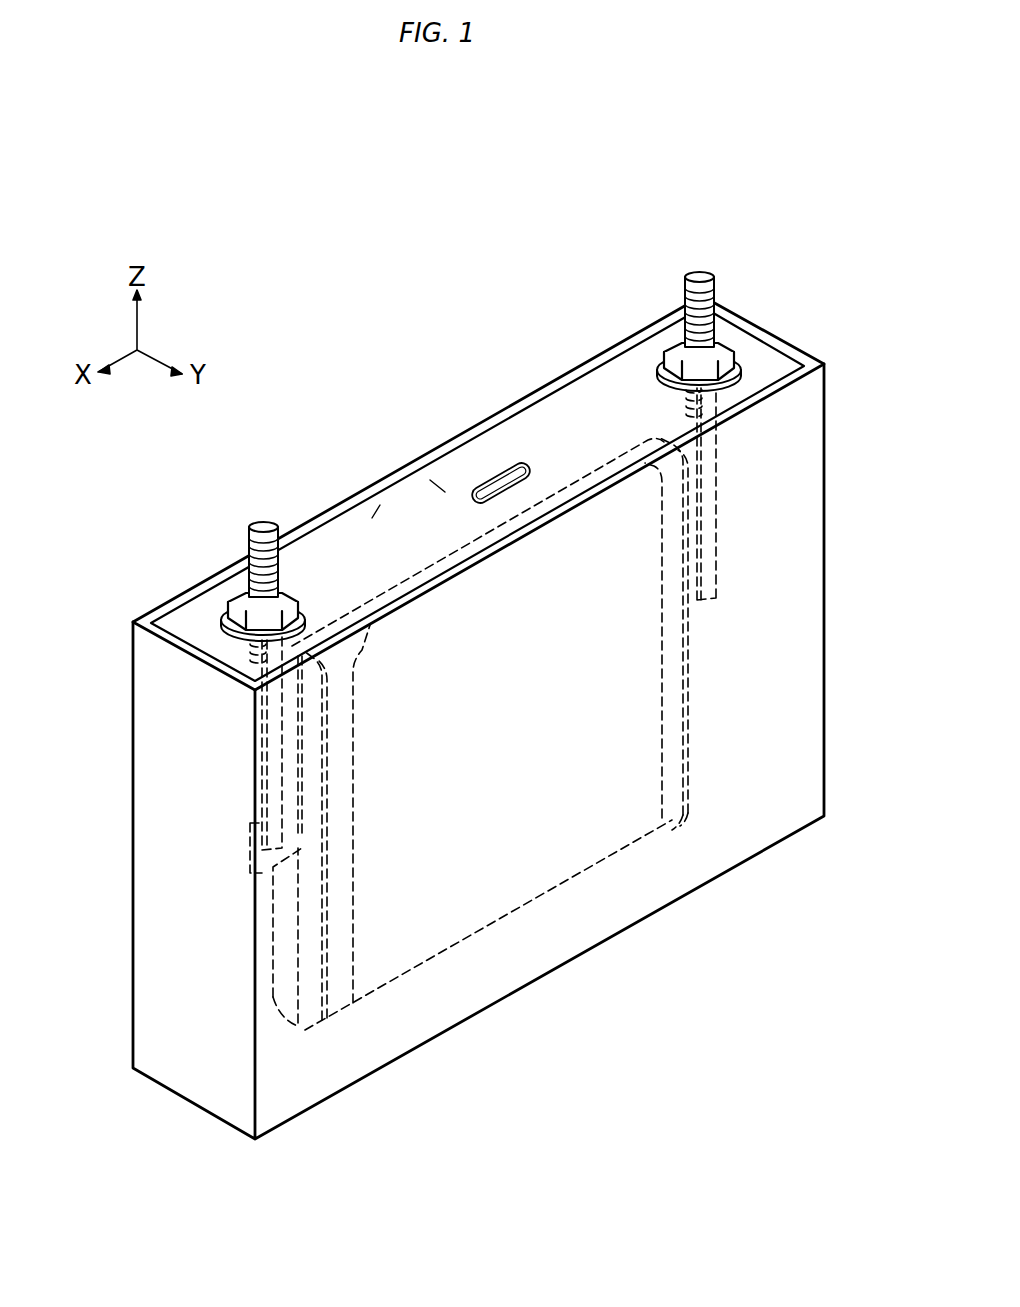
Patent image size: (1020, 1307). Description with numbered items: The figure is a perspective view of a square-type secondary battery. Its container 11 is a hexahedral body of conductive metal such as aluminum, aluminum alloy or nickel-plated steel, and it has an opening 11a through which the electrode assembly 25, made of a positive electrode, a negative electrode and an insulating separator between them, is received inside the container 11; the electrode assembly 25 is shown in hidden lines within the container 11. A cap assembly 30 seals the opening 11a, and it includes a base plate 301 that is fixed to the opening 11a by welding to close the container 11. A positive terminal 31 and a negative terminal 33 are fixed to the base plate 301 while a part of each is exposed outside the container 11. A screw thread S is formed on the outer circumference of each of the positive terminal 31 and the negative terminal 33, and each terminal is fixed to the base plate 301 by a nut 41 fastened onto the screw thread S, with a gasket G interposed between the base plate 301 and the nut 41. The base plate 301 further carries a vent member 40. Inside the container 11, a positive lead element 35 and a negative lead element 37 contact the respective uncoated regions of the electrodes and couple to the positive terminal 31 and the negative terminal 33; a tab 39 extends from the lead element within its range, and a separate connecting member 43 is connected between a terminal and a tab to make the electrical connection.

The container 11 is at (826, 438).
The opening 11a is at (590, 365).
The electrode assembly 25 is at (512, 875).
The cap assembly 30 is at (376, 512).
The base plate 301 is at (440, 487).
The positive terminal 31 is at (262, 525).
The negative terminal 33 is at (697, 276).
The positive lead element 35 is at (323, 1000).
The negative lead element 37 is at (692, 795).
The tab 39 is at (260, 868).
The vent member 40 is at (501, 481).
The nut 41 is at (245, 594).
The connecting member 43 is at (265, 740).
The screw thread S is at (279, 570).
The gasket G is at (301, 612).